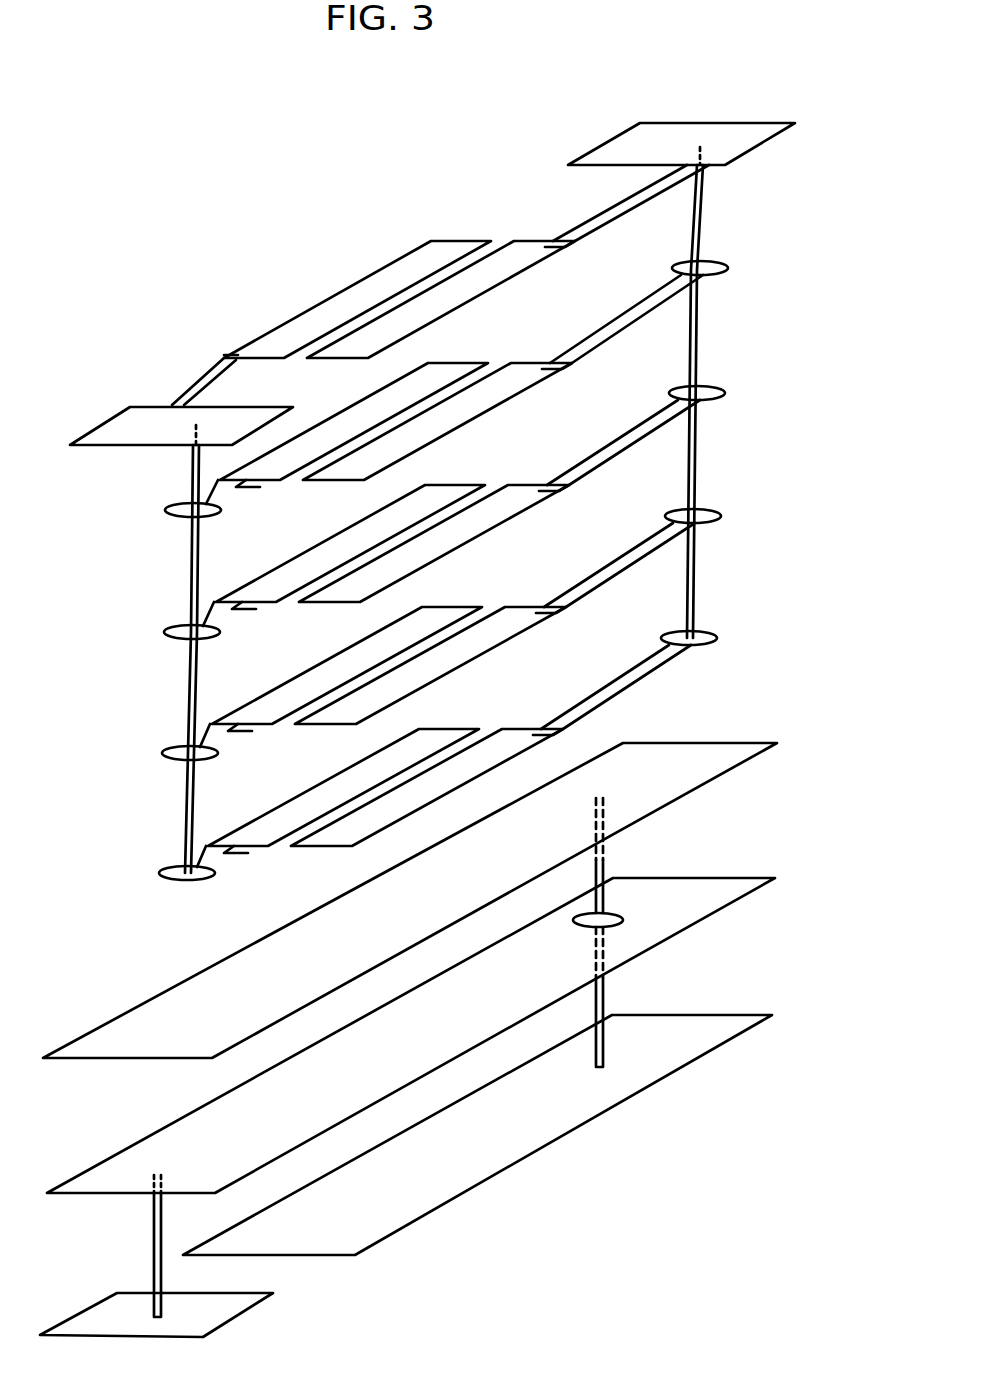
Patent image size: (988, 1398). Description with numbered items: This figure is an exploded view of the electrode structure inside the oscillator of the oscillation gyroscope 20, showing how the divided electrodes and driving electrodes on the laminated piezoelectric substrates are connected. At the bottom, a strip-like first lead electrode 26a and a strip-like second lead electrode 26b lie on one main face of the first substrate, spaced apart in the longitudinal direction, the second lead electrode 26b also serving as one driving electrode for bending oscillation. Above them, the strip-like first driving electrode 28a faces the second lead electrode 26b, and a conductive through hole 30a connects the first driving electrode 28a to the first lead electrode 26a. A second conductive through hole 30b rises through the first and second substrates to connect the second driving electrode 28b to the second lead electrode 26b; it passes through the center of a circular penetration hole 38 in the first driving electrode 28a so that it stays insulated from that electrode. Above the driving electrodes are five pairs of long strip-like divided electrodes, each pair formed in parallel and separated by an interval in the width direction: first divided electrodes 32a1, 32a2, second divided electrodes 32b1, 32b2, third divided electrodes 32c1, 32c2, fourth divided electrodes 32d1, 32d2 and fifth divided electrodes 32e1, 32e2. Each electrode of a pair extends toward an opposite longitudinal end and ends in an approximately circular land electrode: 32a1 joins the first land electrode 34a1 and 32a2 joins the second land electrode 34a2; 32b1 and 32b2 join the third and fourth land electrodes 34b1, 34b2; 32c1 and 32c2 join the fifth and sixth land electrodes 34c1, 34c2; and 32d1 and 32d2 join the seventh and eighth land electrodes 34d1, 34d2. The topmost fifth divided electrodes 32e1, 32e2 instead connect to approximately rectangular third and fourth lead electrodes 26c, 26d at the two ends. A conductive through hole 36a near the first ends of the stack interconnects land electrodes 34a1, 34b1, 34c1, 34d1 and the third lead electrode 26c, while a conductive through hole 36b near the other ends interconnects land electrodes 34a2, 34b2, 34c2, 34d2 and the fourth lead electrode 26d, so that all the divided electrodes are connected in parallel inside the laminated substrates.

The oscillation gyroscope 20 is at (172, 85).
The first lead electrode 26a is at (218, 1315).
The second lead electrode 26b is at (470, 1180).
The third lead electrode 26c is at (146, 419).
The fourth lead electrode 26d is at (632, 152).
The first driving electrode 28a is at (710, 890).
The second driving electrode 28b is at (735, 745).
The conductive through hole 30a is at (157, 1248).
The conductive through hole 30b is at (605, 862).
The first divided electrode 32a1 is at (432, 735).
The first divided electrode 32a2 is at (330, 840).
The second divided electrode 32b1 is at (440, 617).
The second divided electrode 32b2 is at (323, 720).
The third divided electrode 32c1 is at (445, 492).
The third divided electrode 32c2 is at (333, 598).
The fourth divided electrode 32d1 is at (447, 373).
The fourth divided electrode 32d2 is at (340, 477).
The fifth divided electrode 32e1 is at (447, 252).
The fifth divided electrode 32e2 is at (382, 345).
The first land electrode 34a1 is at (160, 876).
The second land electrode 34a2 is at (710, 631).
The third land electrode 34b1 is at (167, 755).
The fourth land electrode 34b2 is at (717, 517).
The fifth land electrode 34c1 is at (167, 636).
The sixth land electrode 34c2 is at (723, 393).
The seventh land electrode 34d1 is at (170, 517).
The eighth land electrode 34d2 is at (720, 263).
The conductive through hole 36a is at (187, 470).
The conductive through hole 36b is at (708, 190).
The penetration hole 38 is at (623, 912).